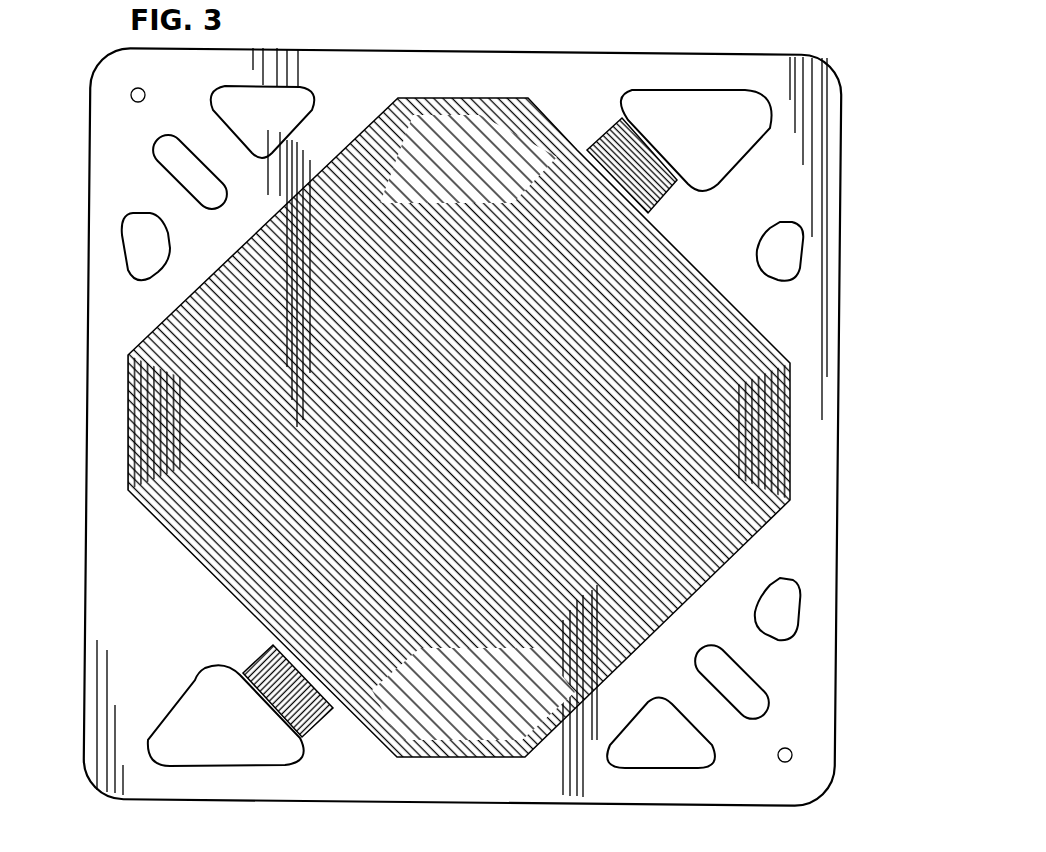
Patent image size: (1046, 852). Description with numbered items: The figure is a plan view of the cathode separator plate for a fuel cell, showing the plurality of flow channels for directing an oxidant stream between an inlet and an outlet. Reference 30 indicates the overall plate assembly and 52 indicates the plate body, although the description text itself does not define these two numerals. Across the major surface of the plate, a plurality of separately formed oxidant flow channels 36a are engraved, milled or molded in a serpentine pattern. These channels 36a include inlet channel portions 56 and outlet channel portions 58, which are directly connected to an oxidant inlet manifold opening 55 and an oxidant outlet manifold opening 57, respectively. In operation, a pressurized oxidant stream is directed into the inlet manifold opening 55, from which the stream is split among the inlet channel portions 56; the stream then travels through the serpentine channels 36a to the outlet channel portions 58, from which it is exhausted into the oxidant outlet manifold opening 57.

The fuel cell separator plate assembly 30 is at (773, 0).
The separator plate 52 is at (813, 520).
The oxidant inlet manifold opening 55 is at (175, 723).
The inlet channel portions 56 is at (267, 652).
The oxidant outlet manifold opening 57 is at (698, 97).
The outlet channel portions 58 is at (592, 143).
The oxidant flow channels 36a is at (693, 338).